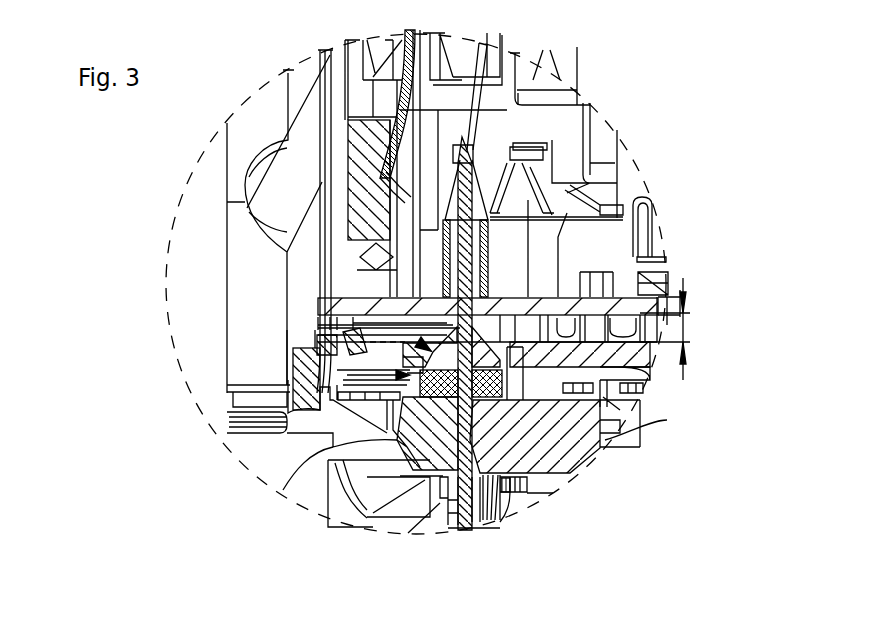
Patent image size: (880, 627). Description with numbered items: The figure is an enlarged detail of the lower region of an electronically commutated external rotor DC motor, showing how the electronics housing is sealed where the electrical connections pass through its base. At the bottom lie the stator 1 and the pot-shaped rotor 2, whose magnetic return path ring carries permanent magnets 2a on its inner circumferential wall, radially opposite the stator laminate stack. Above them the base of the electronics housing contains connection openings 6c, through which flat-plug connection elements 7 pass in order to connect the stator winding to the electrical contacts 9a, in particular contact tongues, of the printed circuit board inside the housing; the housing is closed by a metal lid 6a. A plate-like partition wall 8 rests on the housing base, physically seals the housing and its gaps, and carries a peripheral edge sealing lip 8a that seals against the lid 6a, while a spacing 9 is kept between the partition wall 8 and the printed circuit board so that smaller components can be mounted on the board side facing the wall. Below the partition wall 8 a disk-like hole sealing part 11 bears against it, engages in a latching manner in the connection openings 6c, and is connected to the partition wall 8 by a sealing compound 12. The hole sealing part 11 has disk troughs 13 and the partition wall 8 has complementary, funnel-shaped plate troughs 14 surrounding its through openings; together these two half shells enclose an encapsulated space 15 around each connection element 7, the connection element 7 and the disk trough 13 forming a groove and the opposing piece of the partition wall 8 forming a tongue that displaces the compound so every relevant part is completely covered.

The stator 1 is at (523, 498).
The rotor 2 is at (347, 502).
The permanent magnets 2a is at (407, 530).
The lid 6a is at (307, 84).
The connection openings 6c is at (283, 490).
The connection elements 7 is at (470, 147).
The partition wall 8 is at (650, 365).
The peripheral edge sealing lip 8a is at (322, 358).
The spacing 9 is at (690, 326).
The electrical contacts 9a is at (548, 157).
The hole sealing part 11 is at (597, 468).
The sealing compound 12 is at (470, 405).
The disk troughs 13 is at (327, 380).
The plate troughs 14 is at (413, 340).
The encapsulated space 15 is at (478, 336).